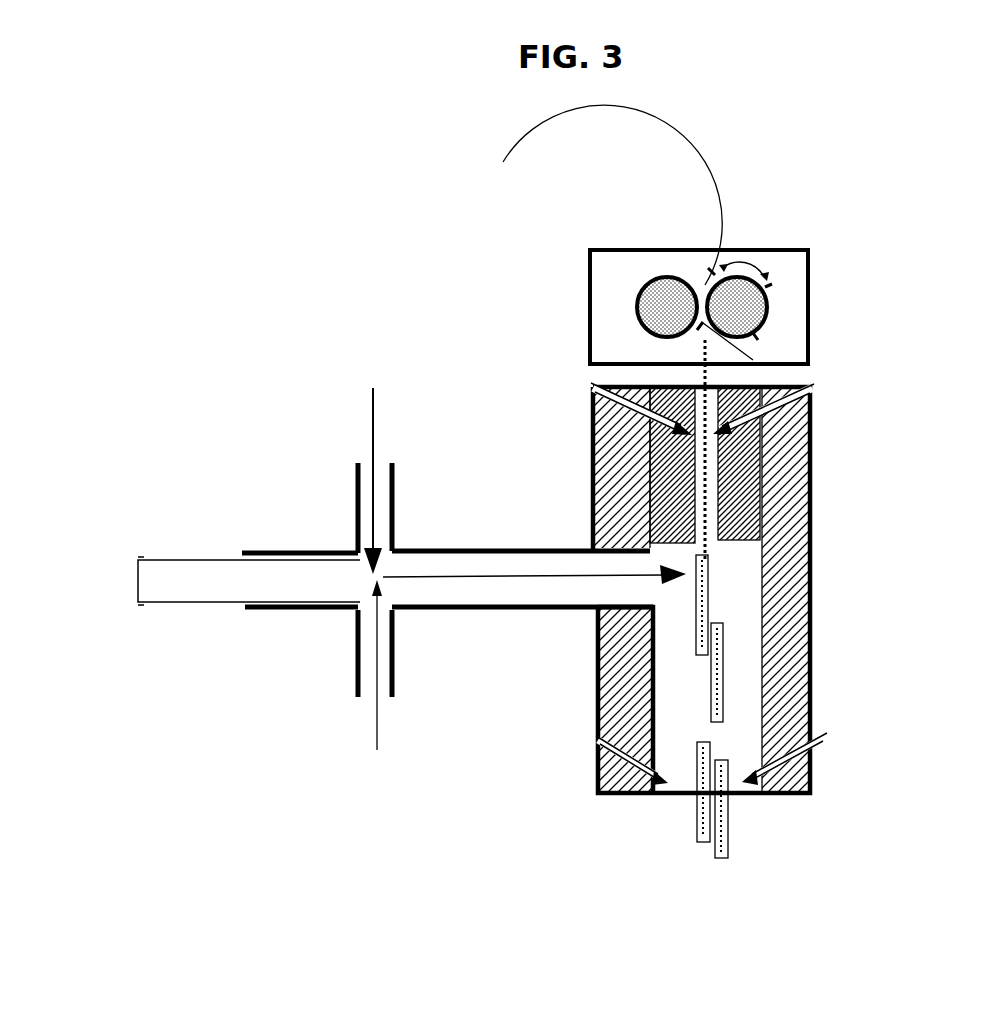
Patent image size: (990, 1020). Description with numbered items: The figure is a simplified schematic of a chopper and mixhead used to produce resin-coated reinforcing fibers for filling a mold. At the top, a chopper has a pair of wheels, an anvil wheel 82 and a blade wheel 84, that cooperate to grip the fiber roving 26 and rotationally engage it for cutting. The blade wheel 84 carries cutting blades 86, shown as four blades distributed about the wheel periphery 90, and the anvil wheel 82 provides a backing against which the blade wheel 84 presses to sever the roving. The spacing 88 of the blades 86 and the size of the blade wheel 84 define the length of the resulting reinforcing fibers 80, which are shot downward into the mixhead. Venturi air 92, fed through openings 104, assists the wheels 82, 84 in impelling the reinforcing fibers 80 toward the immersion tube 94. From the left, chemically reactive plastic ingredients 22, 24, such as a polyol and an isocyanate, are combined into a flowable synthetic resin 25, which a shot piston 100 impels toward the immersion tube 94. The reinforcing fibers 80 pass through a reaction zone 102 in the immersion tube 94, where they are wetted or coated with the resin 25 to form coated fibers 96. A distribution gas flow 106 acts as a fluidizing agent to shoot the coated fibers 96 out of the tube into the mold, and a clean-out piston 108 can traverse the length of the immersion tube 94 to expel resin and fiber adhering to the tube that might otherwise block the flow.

The chemically reactive plastic ingredient 22 is at (375, 655).
The chemically reactive plastic ingredient 24 is at (372, 448).
The flowable synthetic resin 25 is at (512, 580).
The fiber roving 26 is at (658, 153).
The reinforcing fibers 80 is at (722, 447).
The anvil wheel 82 is at (667, 308).
The blade wheel 84 is at (740, 307).
The blades 86 is at (716, 268).
The spacing of the blades 88 is at (755, 273).
The wheel periphery 90 is at (768, 310).
The Venturi air 92 is at (588, 387).
The immersion tube 94 is at (595, 642).
The coated fibers 96 is at (713, 655).
The shot piston 100 is at (228, 583).
The reaction zone 102 is at (723, 570).
The openings 104 is at (590, 410).
The distribution gas flow 106 is at (595, 738).
The clean-out piston 108 is at (750, 525).